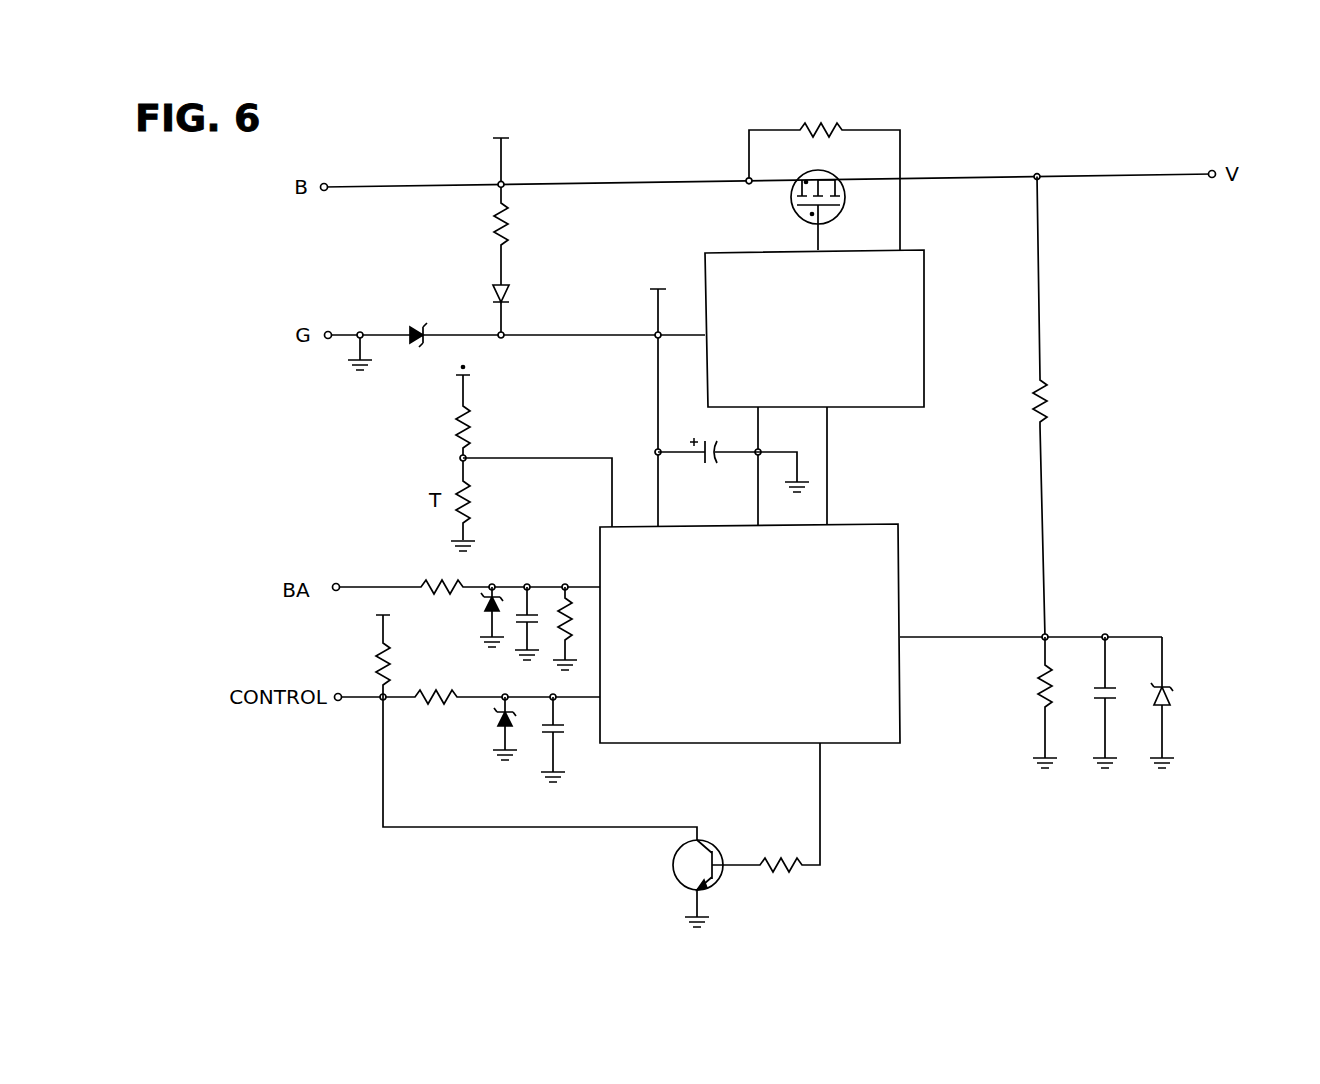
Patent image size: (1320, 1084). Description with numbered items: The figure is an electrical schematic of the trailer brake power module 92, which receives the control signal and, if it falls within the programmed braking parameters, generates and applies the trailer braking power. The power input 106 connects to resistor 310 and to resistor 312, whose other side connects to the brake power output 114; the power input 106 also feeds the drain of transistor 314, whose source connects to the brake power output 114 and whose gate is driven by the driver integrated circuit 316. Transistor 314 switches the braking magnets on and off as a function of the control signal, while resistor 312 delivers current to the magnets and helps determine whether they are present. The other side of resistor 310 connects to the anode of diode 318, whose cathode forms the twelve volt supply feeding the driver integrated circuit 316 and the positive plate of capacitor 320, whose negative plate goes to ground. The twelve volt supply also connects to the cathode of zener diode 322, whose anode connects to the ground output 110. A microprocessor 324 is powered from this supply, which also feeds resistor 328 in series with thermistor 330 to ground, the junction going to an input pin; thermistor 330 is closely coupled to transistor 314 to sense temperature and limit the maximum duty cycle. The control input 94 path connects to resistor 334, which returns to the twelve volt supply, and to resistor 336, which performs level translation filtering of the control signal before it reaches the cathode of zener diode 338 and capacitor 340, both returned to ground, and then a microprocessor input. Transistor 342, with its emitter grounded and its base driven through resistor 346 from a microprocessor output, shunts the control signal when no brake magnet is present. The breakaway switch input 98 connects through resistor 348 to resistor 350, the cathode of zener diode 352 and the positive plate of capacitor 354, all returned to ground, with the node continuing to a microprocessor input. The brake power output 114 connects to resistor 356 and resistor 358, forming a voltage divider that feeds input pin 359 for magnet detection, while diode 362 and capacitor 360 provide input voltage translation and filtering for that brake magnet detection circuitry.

The trailer brake power module 92 is at (1255, 266).
The control input 94 is at (337, 695).
The breakaway switch input 98 is at (335, 583).
The power input 106 is at (322, 184).
The ground output 110 is at (325, 333).
The brake power output 114 is at (1212, 170).
The resistor 310 is at (507, 222).
The resistor 312 is at (797, 127).
The transistor 314 is at (792, 201).
The driver integrated circuit 316 is at (814, 328).
The diode 318 is at (509, 290).
The capacitor 320 is at (702, 458).
The zener diode 322 is at (419, 327).
The microprocessor 324 is at (750, 633).
The resistor 328 is at (469, 423).
The thermistor 330 is at (469, 497).
The resistor 334 is at (388, 641).
The resistor 336 is at (424, 705).
The zener diode 338 is at (496, 724).
The capacitor 340 is at (560, 736).
The transistor 342 is at (714, 885).
The resistor 346 is at (776, 861).
The resistor 348 is at (422, 581).
The resistor 350 is at (567, 599).
The zener diode 352 is at (482, 616).
The capacitor 354 is at (524, 601).
The resistor 356 is at (1043, 384).
The resistor 358 is at (1040, 692).
The input pin 359 is at (902, 636).
The capacitor 360 is at (1101, 702).
The diode 362 is at (1171, 700).